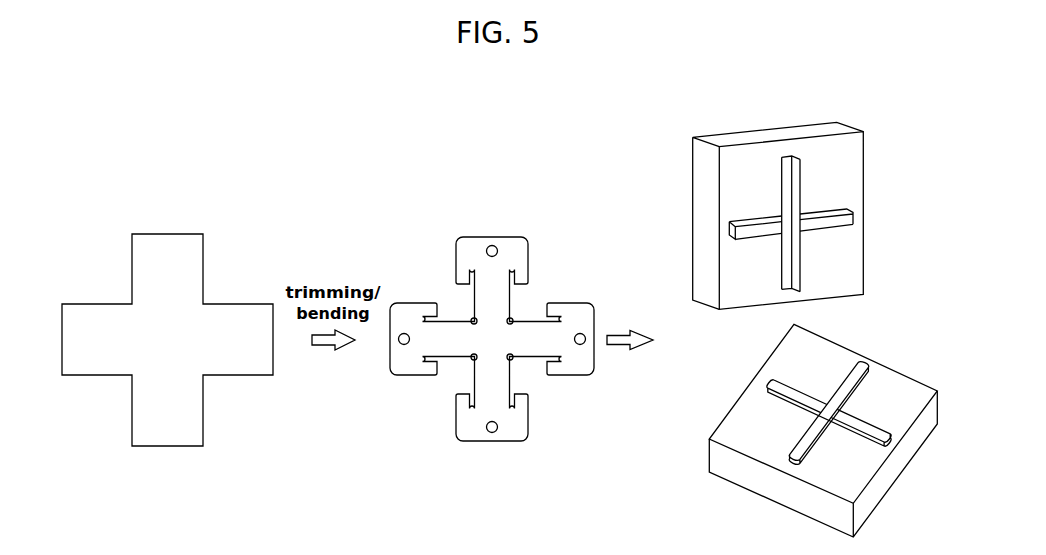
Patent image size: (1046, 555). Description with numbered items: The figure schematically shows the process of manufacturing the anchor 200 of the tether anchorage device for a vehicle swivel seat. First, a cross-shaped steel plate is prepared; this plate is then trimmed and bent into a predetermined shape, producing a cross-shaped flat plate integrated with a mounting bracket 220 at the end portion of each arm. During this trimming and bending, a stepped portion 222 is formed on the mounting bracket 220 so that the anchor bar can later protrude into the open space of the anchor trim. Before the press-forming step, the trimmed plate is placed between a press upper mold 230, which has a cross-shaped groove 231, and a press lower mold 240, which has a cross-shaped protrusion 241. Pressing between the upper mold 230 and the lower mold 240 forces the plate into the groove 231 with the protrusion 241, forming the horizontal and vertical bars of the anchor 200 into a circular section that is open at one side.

The anchor 200 is at (499, 332).
The mounting bracket 220 is at (508, 433).
The stepped portion 222 is at (520, 416).
The press upper mold 230 is at (737, 194).
The cross-shaped groove 231 is at (795, 172).
The press lower mold 240 is at (803, 435).
The cross-shaped protrusion 241 is at (808, 433).